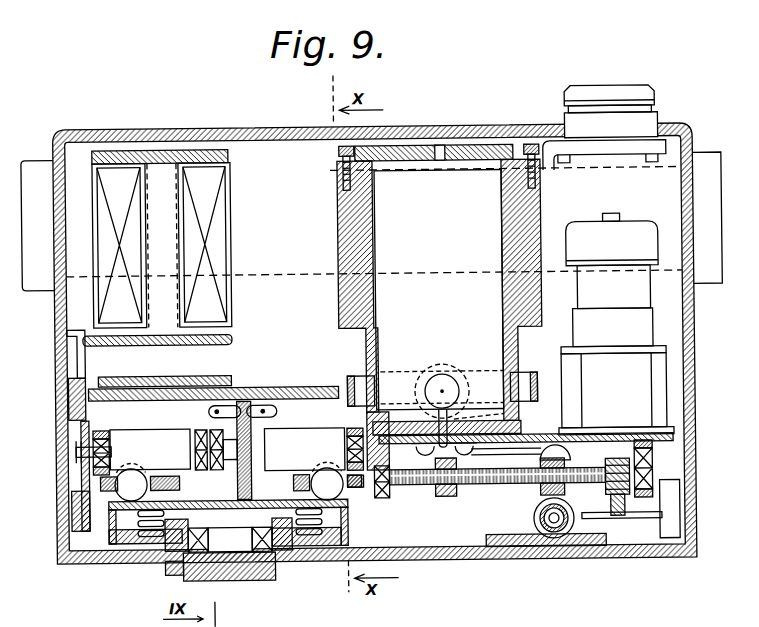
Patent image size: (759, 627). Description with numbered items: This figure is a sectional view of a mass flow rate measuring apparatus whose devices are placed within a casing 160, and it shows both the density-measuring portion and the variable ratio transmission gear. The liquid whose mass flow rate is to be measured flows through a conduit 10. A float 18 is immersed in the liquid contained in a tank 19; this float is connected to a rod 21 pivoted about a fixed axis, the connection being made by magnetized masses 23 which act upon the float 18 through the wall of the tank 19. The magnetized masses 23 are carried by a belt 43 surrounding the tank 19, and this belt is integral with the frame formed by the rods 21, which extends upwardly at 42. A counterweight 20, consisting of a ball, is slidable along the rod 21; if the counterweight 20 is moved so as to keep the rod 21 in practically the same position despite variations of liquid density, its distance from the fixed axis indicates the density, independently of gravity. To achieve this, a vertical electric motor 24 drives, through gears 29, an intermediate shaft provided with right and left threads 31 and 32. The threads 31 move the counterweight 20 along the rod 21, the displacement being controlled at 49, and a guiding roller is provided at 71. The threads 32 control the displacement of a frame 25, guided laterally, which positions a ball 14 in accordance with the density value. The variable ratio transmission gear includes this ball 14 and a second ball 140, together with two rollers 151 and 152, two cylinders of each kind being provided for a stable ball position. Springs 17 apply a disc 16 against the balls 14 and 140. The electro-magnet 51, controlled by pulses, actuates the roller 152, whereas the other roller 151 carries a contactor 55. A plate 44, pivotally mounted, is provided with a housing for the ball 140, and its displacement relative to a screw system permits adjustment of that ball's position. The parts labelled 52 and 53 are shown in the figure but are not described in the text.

The casing 160 is at (78, 127).
The conduit 10 is at (705, 168).
The float 18 is at (440, 185).
The tank 19 is at (530, 194).
The electro-magnet 51 is at (224, 246).
The plate 53 is at (78, 349).
The stop block 52 is at (70, 379).
The contactor 55 is at (258, 404).
The magnetized masses 23 is at (447, 373).
The belt 43 is at (536, 377).
The upward extension of the frame 42 is at (508, 412).
The electric motor 24 is at (630, 302).
The counterweight displacement control 49 is at (582, 437).
The roller 152 is at (160, 445).
The roller 151 is at (300, 440).
The plate 44 is at (98, 482).
The ball 140 is at (132, 494).
The ball 14 is at (311, 485).
The disc 16 is at (213, 498).
The springs 17 is at (152, 537).
The frame 25 is at (354, 488).
The threads 32 is at (395, 481).
The rod 21 is at (488, 457).
The threads 31 is at (517, 477).
The guiding roller 71 is at (543, 523).
The counterweight 20 is at (540, 455).
The gears 29 is at (626, 500).